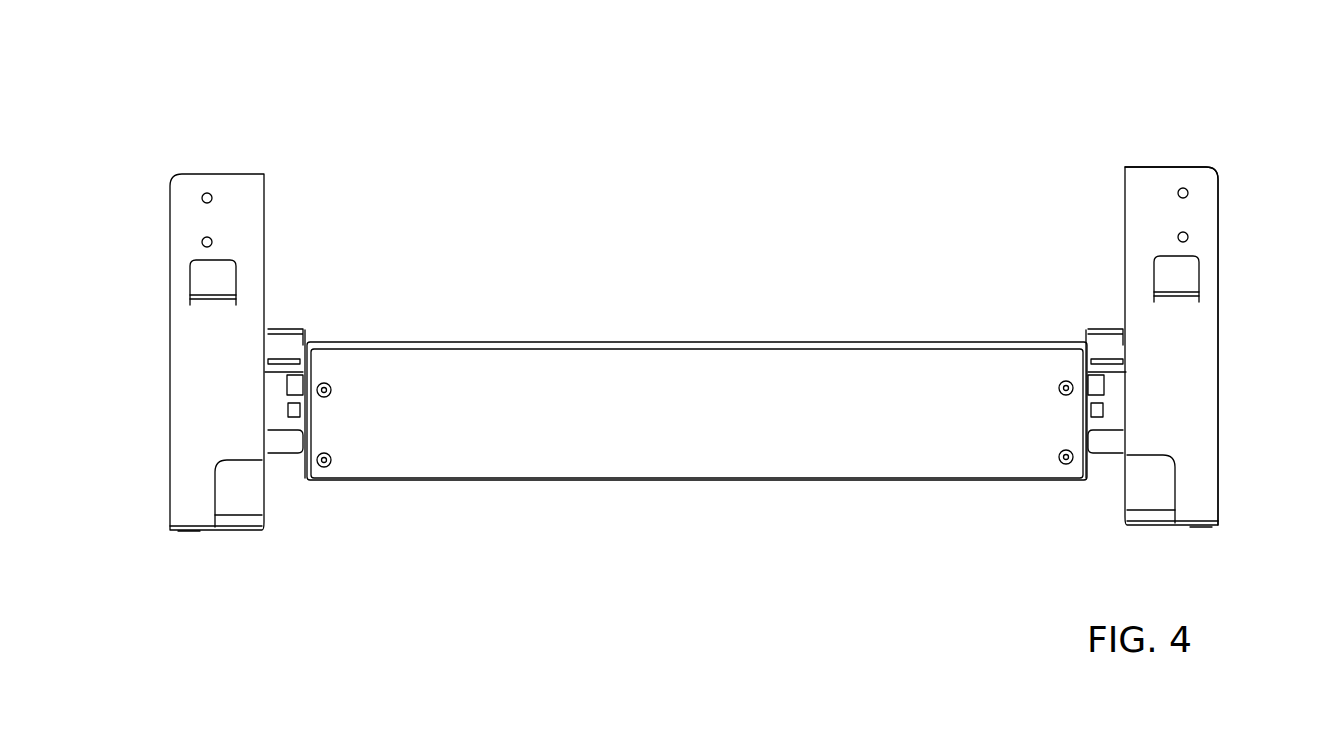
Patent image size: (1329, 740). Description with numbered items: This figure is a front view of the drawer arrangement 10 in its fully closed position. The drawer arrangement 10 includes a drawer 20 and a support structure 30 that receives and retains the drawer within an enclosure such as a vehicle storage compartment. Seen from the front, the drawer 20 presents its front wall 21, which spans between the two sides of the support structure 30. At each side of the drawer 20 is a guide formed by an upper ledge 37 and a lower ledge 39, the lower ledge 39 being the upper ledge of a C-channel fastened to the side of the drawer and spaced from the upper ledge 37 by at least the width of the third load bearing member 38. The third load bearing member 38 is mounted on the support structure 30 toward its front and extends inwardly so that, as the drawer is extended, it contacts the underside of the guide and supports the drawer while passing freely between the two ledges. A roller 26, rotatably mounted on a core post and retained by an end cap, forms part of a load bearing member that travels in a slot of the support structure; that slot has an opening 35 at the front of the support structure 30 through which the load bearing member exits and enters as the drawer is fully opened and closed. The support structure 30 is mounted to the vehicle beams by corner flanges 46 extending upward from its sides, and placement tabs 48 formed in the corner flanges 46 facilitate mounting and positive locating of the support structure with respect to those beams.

The drawer arrangement 10 is at (737, 70).
The drawer 20 is at (697, 375).
The front wall 21 is at (720, 418).
The roller 26 is at (270, 390).
The support structure 30 is at (1148, 155).
The opening 35 is at (240, 490).
The upper ledge 37 is at (290, 330).
The third load bearing member 38 is at (282, 440).
The lower ledge 39 is at (285, 362).
The corner flanges 46 is at (1224, 162).
The placement tabs 48 is at (1192, 290).